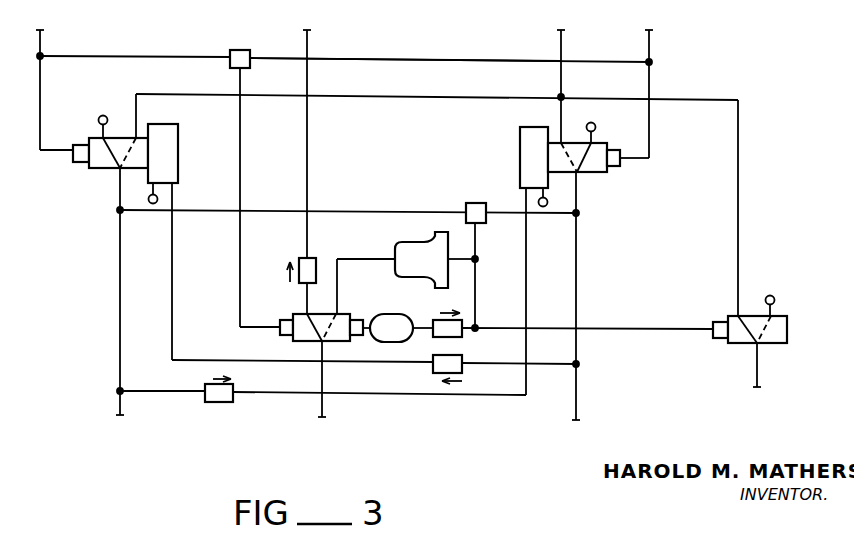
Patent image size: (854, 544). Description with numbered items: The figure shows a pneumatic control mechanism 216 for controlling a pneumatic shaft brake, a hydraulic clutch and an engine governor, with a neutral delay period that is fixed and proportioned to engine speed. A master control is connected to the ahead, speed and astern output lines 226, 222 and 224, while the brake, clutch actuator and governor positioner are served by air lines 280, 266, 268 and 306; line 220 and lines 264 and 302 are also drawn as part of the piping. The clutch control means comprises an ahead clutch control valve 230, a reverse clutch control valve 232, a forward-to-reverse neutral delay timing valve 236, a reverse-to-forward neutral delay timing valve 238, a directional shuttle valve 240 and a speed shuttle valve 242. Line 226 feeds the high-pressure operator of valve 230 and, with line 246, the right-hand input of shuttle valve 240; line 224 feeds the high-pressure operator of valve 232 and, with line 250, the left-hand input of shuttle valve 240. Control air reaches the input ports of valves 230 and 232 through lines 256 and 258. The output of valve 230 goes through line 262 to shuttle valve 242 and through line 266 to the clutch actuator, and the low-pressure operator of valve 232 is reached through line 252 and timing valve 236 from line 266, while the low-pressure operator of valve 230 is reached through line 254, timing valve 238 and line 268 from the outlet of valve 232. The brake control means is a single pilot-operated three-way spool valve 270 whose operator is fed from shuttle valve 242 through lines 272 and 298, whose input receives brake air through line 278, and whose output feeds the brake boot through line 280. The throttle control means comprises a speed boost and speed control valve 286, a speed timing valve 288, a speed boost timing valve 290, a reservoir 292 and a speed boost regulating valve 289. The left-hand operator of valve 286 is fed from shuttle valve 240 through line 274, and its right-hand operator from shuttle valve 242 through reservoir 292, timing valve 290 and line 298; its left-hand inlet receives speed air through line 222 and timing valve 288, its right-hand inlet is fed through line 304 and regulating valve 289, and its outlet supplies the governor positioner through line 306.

The control mechanism 216 is at (747, 87).
The conduit 220 is at (563, 40).
The speed output line 222 is at (309, 40).
The astern output line 224 is at (44, 40).
The ahead output line 226 is at (651, 40).
The ahead clutch control valve 230 is at (598, 174).
The reverse clutch control valve 232 is at (118, 135).
The forward-to-reverse neutral delay timing valve 236 is at (455, 356).
The reverse-to-forward neutral delay timing valve 238 is at (216, 403).
The directional shuttle valve 240 is at (239, 50).
The speed shuttle valve 242 is at (475, 203).
The line 246 is at (430, 59).
The line 250 is at (133, 56).
The line 252 is at (407, 370).
The line 254 is at (283, 395).
The line 256 is at (558, 122).
The line 258 is at (436, 104).
The line 262 is at (546, 222).
The conduit 264 is at (362, 212).
The line 266 is at (578, 389).
The line 268 is at (118, 235).
The brake control valve 270 is at (758, 314).
The line 272 is at (654, 327).
The line 274 is at (241, 258).
The line 278 is at (740, 229).
The line 280 is at (759, 371).
The speed boost and speed control valve 286 is at (288, 340).
The speed timing valve 288 is at (318, 258).
The speed boost regulating valve 289 is at (396, 250).
The speed boost timing valve 290 is at (432, 322).
The reservoir 292 is at (402, 353).
The line 298 is at (477, 302).
The conduit 302 is at (309, 168).
The line 304 is at (358, 260).
The line 306 is at (324, 408).